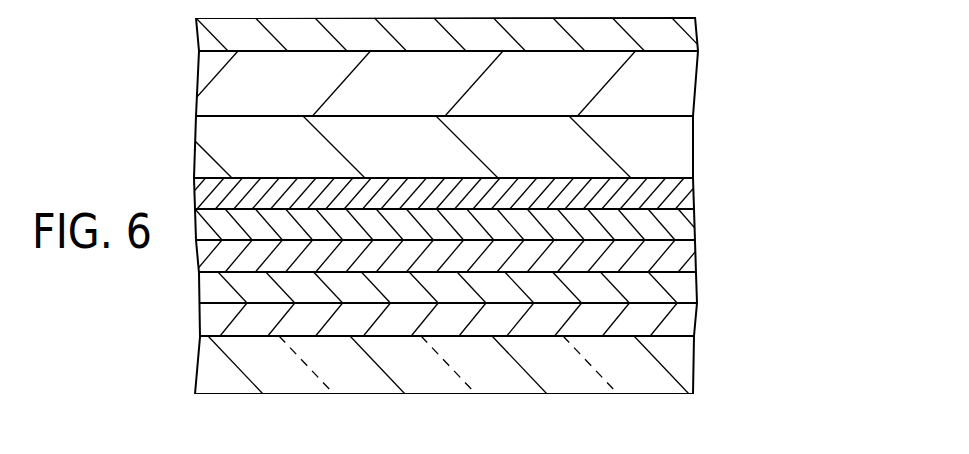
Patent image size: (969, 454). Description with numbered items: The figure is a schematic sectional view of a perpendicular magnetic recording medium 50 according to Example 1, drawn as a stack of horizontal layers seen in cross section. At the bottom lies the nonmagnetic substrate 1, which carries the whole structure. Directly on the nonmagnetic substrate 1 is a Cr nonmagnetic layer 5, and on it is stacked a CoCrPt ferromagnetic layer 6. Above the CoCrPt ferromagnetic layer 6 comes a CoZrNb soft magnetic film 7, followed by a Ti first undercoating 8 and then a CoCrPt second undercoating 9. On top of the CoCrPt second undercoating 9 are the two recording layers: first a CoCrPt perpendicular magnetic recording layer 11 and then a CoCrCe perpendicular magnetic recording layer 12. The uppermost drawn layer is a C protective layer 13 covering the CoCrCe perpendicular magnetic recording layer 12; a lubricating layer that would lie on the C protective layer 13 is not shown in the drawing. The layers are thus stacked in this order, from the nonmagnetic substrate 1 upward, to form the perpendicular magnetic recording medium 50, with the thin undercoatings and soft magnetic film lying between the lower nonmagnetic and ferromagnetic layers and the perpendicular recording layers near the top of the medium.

The perpendicular magnetic recording medium 50 is at (822, 212).
The C protective layer 13 is at (688, 30).
The CoCrCe perpendicular magnetic recording layer 12 is at (688, 77).
The CoCrPt perpendicular magnetic recording layer 11 is at (688, 138).
The CoCrPt second undercoating 9 is at (688, 190).
The Ti first undercoating 8 is at (688, 222).
The CoZrNb soft magnetic film 7 is at (688, 255).
The CoCrPt ferromagnetic layer 6 is at (688, 285).
The Cr nonmagnetic layer 5 is at (688, 318).
The nonmagnetic substrate 1 is at (688, 360).